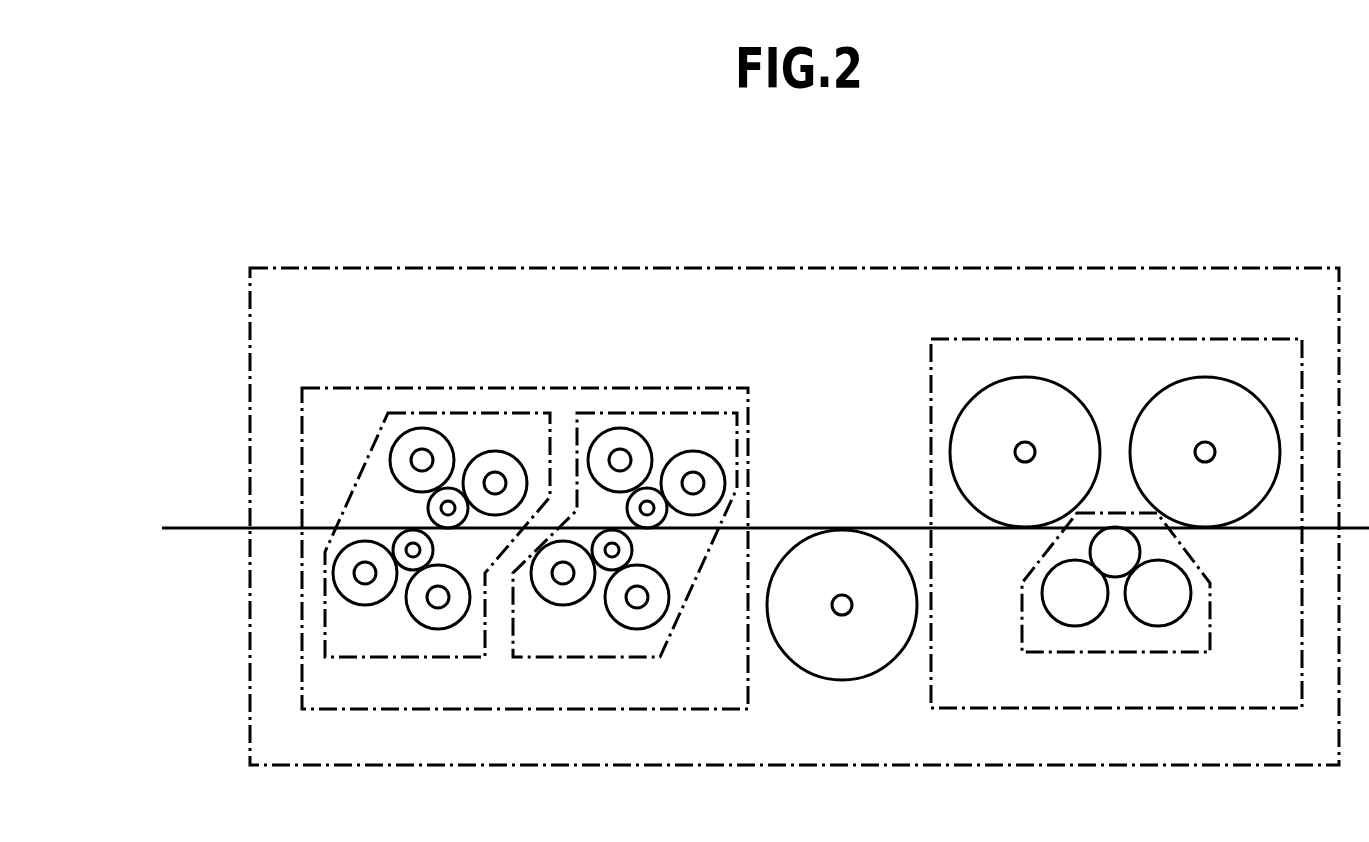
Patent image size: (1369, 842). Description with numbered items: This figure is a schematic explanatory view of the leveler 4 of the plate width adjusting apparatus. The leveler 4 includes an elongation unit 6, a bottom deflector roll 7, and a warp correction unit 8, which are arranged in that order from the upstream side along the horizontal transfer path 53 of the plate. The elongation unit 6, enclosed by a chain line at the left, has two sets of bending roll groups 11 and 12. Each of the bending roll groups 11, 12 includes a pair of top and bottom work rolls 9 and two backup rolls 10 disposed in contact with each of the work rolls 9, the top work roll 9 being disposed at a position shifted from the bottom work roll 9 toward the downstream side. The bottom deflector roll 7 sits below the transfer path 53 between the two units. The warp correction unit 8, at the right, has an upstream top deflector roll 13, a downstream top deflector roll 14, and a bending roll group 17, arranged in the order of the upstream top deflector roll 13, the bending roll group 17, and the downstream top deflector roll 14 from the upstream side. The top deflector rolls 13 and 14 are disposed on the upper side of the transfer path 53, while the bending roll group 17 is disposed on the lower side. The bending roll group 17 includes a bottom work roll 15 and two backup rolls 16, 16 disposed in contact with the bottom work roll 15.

The leveler 4 is at (483, 268).
The elongation unit 6 is at (375, 382).
The bottom deflector roll 7 is at (840, 528).
The warp correction unit 8 is at (1190, 338).
The work roll 9 is at (399, 540).
The backup roll 10 is at (423, 430).
The bending roll group 11 is at (403, 660).
The bending roll group 12 is at (597, 660).
The upstream top deflector roll 13 is at (997, 378).
The downstream top deflector roll 14 is at (1158, 393).
The bottom work roll 15 is at (1143, 545).
The backup roll 16 is at (1067, 612).
The bending roll group 17 is at (1082, 653).
The sheet conveying path 53 is at (217, 527).